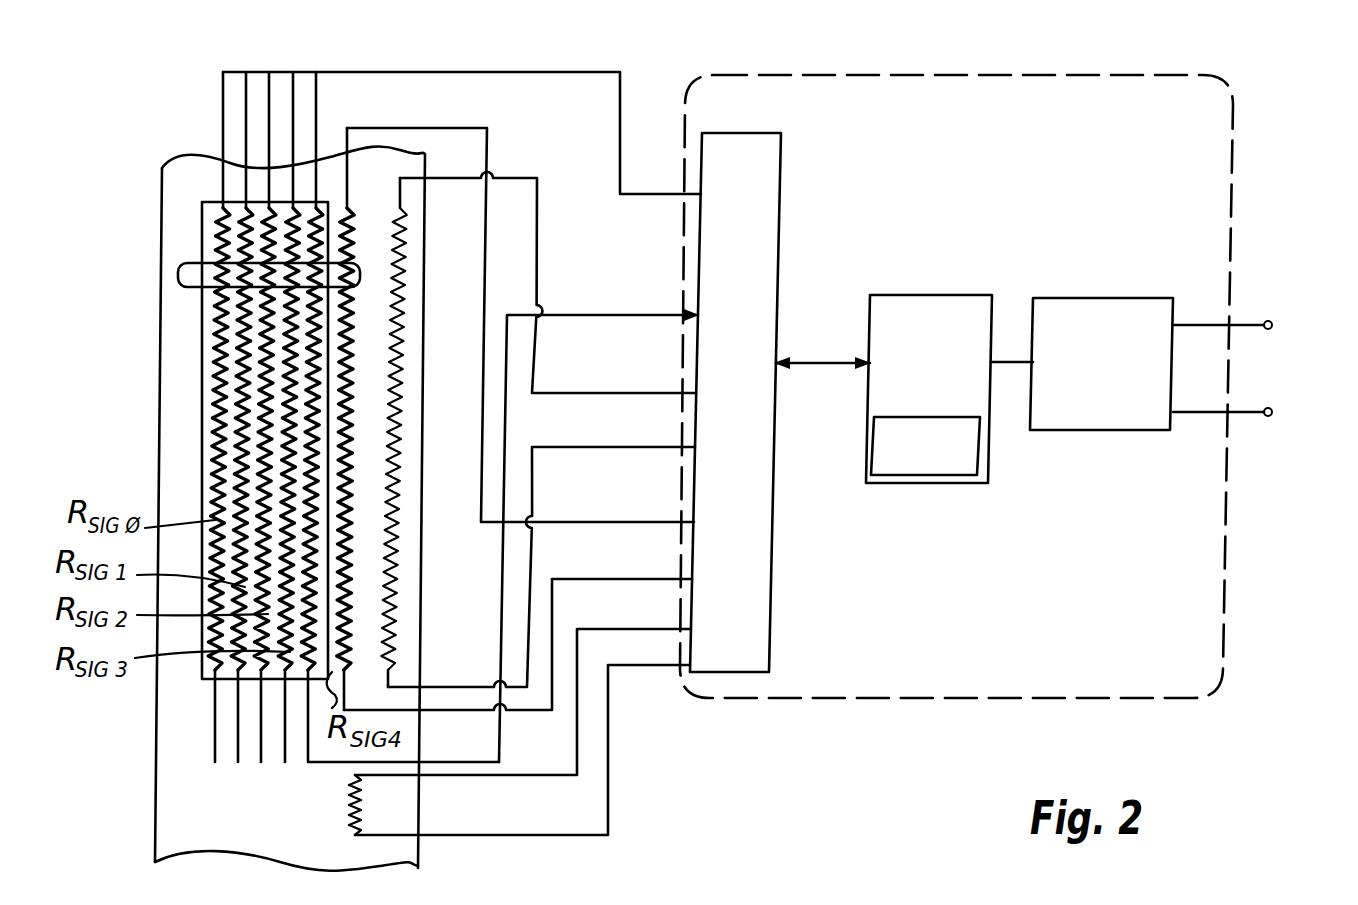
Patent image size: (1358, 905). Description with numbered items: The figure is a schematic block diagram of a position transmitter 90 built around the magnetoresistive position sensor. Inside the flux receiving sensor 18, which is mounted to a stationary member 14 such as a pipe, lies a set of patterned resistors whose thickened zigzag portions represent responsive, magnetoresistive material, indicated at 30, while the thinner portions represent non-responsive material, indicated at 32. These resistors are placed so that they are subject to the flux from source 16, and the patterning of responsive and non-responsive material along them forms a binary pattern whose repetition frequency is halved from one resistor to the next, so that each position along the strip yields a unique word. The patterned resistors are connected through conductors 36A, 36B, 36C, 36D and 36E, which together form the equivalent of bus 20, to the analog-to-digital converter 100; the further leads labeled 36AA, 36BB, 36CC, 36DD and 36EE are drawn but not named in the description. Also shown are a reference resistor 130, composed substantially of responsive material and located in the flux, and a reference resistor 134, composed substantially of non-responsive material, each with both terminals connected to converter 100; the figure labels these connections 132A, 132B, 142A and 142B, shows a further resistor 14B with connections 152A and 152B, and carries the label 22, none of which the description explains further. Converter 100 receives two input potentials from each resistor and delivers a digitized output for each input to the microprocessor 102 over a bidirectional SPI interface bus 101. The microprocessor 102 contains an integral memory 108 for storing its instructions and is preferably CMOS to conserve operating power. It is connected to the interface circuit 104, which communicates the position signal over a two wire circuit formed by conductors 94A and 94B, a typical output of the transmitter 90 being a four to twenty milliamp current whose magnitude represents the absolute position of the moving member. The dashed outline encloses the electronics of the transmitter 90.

The stationary member 14 is at (318, 862).
The reference resistor 14B is at (362, 806).
The source 16 is at (178, 292).
The flux receiving sensor 18 is at (184, 147).
The bus 20 is at (540, 68).
The system 22 is at (1267, 136).
The responsive material 30 is at (320, 318).
The non-responsive material 32 is at (340, 616).
The conductor 36A is at (224, 77).
The conductor 36B is at (247, 88).
The conductor 36C is at (270, 102).
The conductor 36D is at (297, 92).
The conductor 36E is at (317, 112).
The sense conductor 36AA is at (213, 746).
The sense conductor 36BB is at (243, 748).
The sense conductor 36CC is at (260, 750).
The sense conductor 36DD is at (289, 750).
The sense conductor 36EE is at (287, 765).
The transmitter 90 is at (1006, 72).
The conductor 94A is at (1176, 324).
The conductor 94B is at (1175, 414).
The analog-to-digital converter 100 is at (760, 312).
The bidirectional SPI interface bus 101 is at (812, 360).
The microprocessor 102 is at (952, 411).
The interface circuit 104 is at (1132, 411).
The memory 108 is at (952, 472).
The reference resistor 130 is at (353, 510).
The conductor 132A is at (487, 240).
The conductor 132B is at (585, 578).
The reference resistor 134 is at (390, 523).
The conductor 142A is at (548, 392).
The conductor 142B is at (545, 447).
The conductor 152A is at (582, 628).
The conductor 152B is at (620, 668).